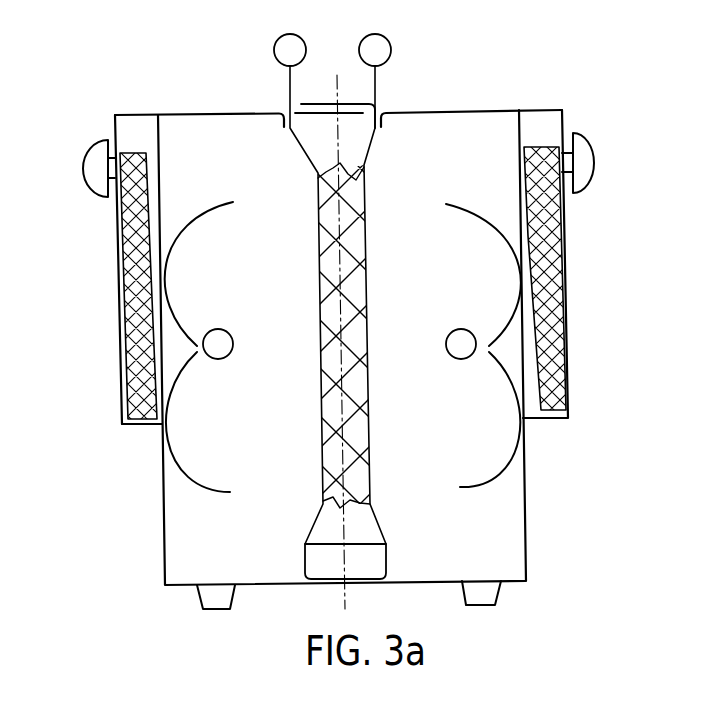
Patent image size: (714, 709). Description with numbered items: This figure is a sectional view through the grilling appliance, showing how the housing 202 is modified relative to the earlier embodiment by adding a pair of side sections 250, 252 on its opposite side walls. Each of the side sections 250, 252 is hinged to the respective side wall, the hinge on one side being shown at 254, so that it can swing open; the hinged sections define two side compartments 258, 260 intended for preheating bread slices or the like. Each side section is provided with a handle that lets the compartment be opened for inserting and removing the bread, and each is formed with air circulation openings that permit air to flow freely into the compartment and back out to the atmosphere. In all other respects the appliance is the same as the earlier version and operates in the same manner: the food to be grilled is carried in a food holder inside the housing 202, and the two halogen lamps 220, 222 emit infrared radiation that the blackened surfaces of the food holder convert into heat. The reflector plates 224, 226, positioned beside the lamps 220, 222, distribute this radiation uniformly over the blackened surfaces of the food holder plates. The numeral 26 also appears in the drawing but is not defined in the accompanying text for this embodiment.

The housing 202 is at (240, 112).
The halogen lamp 220 is at (200, 351).
The halogen lamp 222 is at (477, 358).
The reflector plate 224 is at (205, 485).
The reflector plate 226 is at (490, 473).
The side section 250 is at (121, 288).
The side section 252 is at (545, 110).
The hinge 254 is at (154, 424).
The side compartment 258 is at (132, 249).
The side compartment 260 is at (86, 152).
The right knob 26 is at (593, 143).